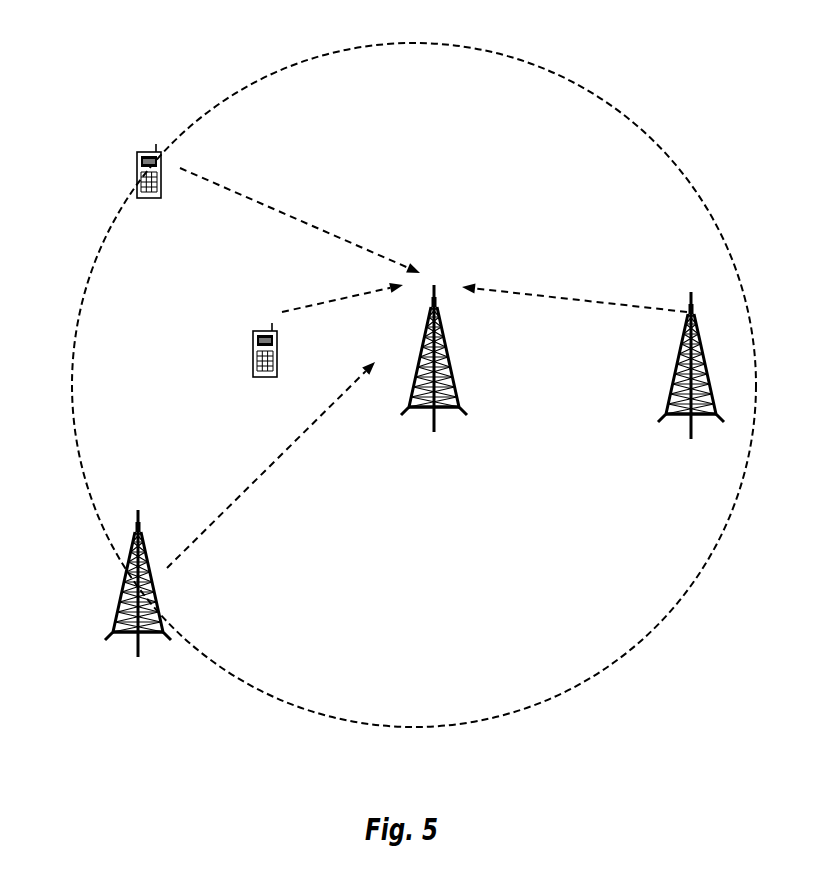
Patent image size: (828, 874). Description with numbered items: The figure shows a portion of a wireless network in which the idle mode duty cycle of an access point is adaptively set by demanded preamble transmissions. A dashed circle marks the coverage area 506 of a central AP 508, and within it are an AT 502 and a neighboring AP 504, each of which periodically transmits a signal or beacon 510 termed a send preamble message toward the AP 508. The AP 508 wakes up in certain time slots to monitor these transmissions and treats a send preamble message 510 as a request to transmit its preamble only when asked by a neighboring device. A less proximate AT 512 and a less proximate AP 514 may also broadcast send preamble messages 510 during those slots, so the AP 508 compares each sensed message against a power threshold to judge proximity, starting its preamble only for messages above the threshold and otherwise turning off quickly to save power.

The AT 502 is at (253, 358).
The AP 504 is at (678, 357).
The coverage area 506 is at (577, 80).
The AP 508 is at (452, 357).
The send preamble message 510 is at (265, 205).
The AT 512 is at (137, 180).
The AP 514 is at (142, 540).